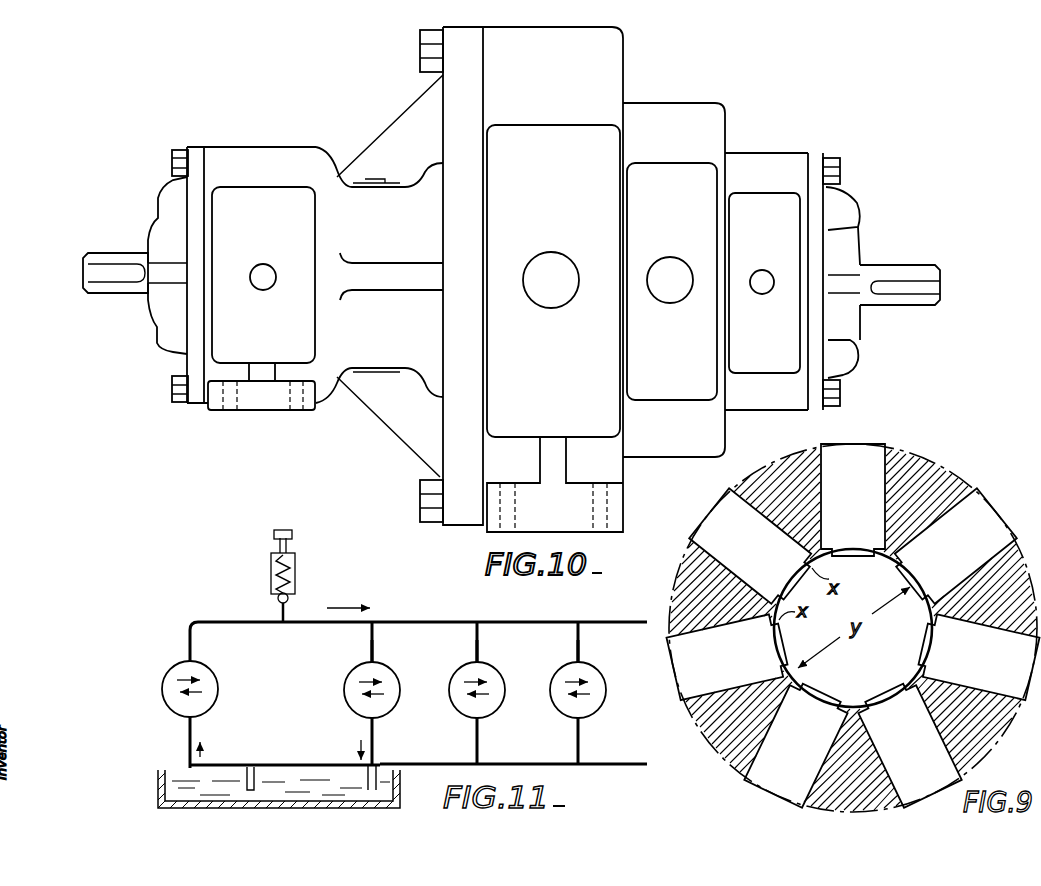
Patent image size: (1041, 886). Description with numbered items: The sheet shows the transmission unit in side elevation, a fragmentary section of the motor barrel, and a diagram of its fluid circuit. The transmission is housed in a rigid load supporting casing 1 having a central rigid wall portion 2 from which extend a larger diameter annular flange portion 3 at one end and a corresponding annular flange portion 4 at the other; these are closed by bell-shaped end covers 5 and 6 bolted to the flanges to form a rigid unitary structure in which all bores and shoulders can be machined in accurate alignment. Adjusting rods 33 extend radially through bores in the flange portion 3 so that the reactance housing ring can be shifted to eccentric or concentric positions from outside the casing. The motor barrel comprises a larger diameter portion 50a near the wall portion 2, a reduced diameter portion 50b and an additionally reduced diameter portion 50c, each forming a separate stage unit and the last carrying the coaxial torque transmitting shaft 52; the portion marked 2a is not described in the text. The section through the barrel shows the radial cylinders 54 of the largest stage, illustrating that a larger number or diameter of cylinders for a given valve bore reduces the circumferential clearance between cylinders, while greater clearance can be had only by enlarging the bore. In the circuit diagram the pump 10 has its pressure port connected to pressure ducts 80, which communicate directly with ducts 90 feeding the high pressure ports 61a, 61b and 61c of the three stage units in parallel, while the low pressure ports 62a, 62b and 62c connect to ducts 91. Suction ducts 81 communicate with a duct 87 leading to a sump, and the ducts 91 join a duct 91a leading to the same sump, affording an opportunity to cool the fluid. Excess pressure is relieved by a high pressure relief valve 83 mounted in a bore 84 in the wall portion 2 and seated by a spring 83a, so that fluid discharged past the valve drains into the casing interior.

In FIG. 10, the load supporting casing 1 is at (648, 95).
In FIG. 10, the central rigid wall portion 2 is at (426, 178).
In FIG. 10, the motor housing section 2a is at (763, 120).
In FIG. 10, the annular flange portion 3 is at (231, 158).
In FIG. 10, the annular flange portion 4 is at (615, 80).
In FIG. 10, the end cover 5 is at (197, 353).
In FIG. 10, the end cover 6 is at (820, 162).
In FIG. 10, the adjusting rod 33 is at (265, 290).
In FIG. 10, the torque transmitting shaft 52 is at (888, 263).
In FIG. 11, the larger diameter barrel portion 50a is at (397, 682).
In FIG. 9, the larger diameter barrel portion 50a is at (940, 466).
In FIG. 9, the radial cylinders 54 is at (853, 500).
In FIG. 11, the pump 10 is at (218, 686).
In FIG. 11, the reduced diameter barrel portion 50b is at (502, 682).
In FIG. 11, the additionally reduced diameter barrel portion 50c is at (603, 682).
In FIG. 11, the high pressure port 61a is at (375, 650).
In FIG. 11, the high pressure port 61b is at (480, 650).
In FIG. 11, the high pressure port 61c is at (581, 650).
In FIG. 11, the low pressure port 62a is at (375, 740).
In FIG. 11, the low pressure port 62b is at (480, 740).
In FIG. 11, the low pressure port 62c is at (581, 740).
In FIG. 11, the pressure ducts 80 is at (218, 621).
In FIG. 11, the suction ducts 81 is at (196, 764).
In FIG. 11, the high pressure relief valve 83 is at (290, 600).
In FIG. 11, the spring 83a is at (296, 572).
In FIG. 11, the bore 84 is at (295, 562).
In FIG. 11, the sump duct 87 is at (268, 769).
In FIG. 11, the high pressure motor ducts 90 is at (436, 617).
In FIG. 11, the low pressure motor ducts 91 is at (430, 762).
In FIG. 11, the return duct 91a is at (370, 782).